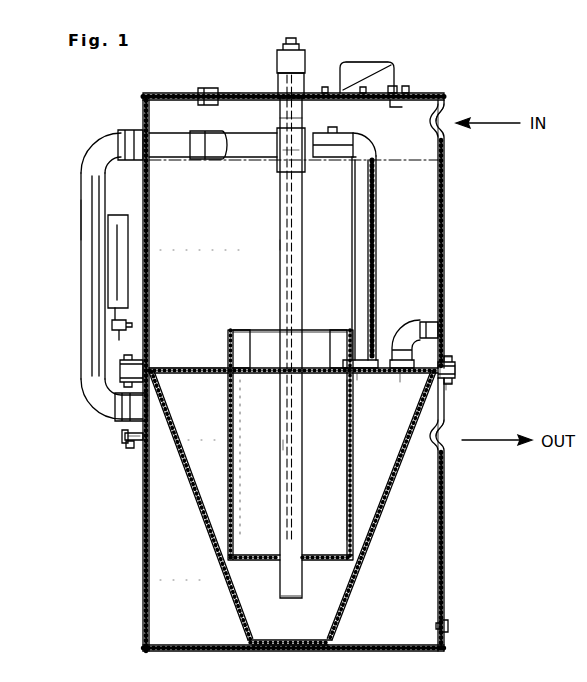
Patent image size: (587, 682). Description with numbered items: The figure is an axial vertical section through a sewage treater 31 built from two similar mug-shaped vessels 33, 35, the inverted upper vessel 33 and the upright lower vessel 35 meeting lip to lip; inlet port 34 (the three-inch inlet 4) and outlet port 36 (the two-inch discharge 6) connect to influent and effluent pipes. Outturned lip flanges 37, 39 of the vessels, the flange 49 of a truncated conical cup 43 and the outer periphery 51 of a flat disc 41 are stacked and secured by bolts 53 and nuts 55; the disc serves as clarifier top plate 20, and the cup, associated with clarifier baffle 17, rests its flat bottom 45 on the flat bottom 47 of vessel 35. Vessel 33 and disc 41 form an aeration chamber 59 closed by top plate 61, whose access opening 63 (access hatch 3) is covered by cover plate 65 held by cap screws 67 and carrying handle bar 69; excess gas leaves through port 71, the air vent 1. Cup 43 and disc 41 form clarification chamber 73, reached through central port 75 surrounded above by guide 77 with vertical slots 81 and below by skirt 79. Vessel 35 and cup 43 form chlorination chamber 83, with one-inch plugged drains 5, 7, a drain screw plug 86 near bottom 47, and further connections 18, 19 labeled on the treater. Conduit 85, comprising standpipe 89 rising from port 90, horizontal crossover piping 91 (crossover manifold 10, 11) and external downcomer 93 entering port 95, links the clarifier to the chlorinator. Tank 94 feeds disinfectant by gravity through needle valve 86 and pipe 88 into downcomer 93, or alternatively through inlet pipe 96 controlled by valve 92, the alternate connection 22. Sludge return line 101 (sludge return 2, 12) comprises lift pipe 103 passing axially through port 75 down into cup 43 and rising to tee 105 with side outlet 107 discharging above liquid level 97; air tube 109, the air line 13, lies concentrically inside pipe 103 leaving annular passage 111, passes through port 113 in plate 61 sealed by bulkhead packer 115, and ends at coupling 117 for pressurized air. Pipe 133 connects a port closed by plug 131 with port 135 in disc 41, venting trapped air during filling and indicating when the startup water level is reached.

The air vent 1 is at (222, 92).
The sludge return 2 is at (306, 92).
The access hatch 3 is at (380, 72).
The inlet 4 is at (441, 118).
The drain 5 is at (444, 328).
The discharge 6 is at (443, 431).
The drain 7 is at (450, 628).
The crossover manifold 10 is at (140, 133).
The crossover manifold 11 is at (81, 222).
The sludge return 12 is at (278, 132).
The air line 13 is at (302, 222).
The clarifier baffle 17 is at (230, 455).
The pipe-thread connection 18 is at (352, 374).
The drain 19 is at (398, 374).
The clarifier top plate 20 is at (165, 366).
The alternate connection for disinfectant 22 is at (122, 440).
The sewage treater 31 is at (450, 241).
The inverted vessel 33 is at (442, 208).
The inlet port 34 is at (443, 130).
The upright vessel 35 is at (442, 568).
The outlet port 36 is at (443, 445).
The lip flange 37 is at (454, 368).
The lip flange 39 is at (454, 382).
The disc 41 is at (192, 367).
The truncated conical cup 43 is at (192, 500).
The cup bottom 45 is at (292, 640).
The vessel bottom 47 is at (215, 642).
The cup flange 49 is at (458, 373).
The disc flange 51 is at (456, 371).
The bolts 53 is at (449, 360).
The nuts 55 is at (448, 388).
The aeration chamber 59 is at (164, 287).
The top plate 61 is at (240, 92).
The access opening 63 is at (399, 103).
The cover plate 65 is at (396, 87).
The cap screws 67 is at (409, 88).
The handle bar 69 is at (370, 60).
The vent port 71 is at (200, 92).
The clarification chamber 73 is at (182, 421).
The central port 75 is at (265, 375).
The circular guide 77 is at (230, 340).
The circular skirt 79 is at (354, 442).
The slots 81 is at (243, 330).
The chlorination chamber 83 is at (161, 564).
The conduit 85 is at (90, 136).
The needle valve 86 is at (110, 327).
The pipe 88 is at (99, 356).
The standpipe 89 is at (377, 256).
The port 90 is at (364, 378).
The crossover piping 91 is at (185, 157).
The valve 92 is at (128, 448).
The downcomer 93 is at (90, 275).
The tank 94 is at (118, 214).
The port 95 is at (150, 418).
The inlet pipe 96 is at (124, 436).
The liquid level 97 is at (376, 158).
The sludge return line 101 is at (277, 248).
The lift pipe 103 is at (278, 582).
The tee 105 is at (284, 152).
The side outlet 107 is at (334, 158).
The air tube 109 is at (294, 502).
The annular flow passage 111 is at (285, 446).
The port 113 is at (286, 82).
The bulkhead packer 115 is at (312, 113).
The coupling 117 is at (300, 58).
The plug 131 is at (432, 320).
The pipe 133 is at (400, 320).
The port 135 is at (402, 380).